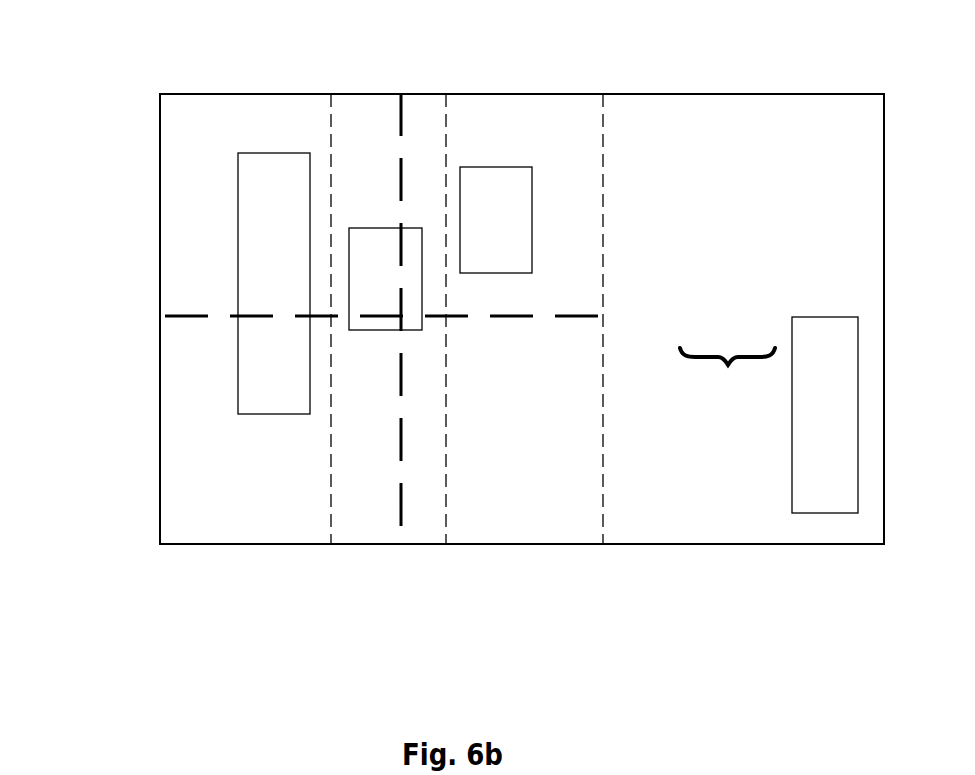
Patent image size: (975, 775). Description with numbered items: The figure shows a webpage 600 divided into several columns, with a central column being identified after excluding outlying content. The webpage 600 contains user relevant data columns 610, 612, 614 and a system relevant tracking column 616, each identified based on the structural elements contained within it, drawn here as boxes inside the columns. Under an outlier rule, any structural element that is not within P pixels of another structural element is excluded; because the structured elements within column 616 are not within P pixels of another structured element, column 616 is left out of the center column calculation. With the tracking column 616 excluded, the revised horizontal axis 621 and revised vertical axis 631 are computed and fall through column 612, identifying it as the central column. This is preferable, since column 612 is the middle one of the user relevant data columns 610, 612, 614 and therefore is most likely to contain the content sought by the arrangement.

The webpage 600 is at (160, 94).
The user relevant data column 610 is at (279, 545).
The user relevant data column 612 is at (383, 545).
The user relevant data column 614 is at (532, 545).
The system relevant tracking column 616 is at (753, 545).
The revised horizontal axis 621 is at (543, 316).
The revised vertical axis 631 is at (400, 432).